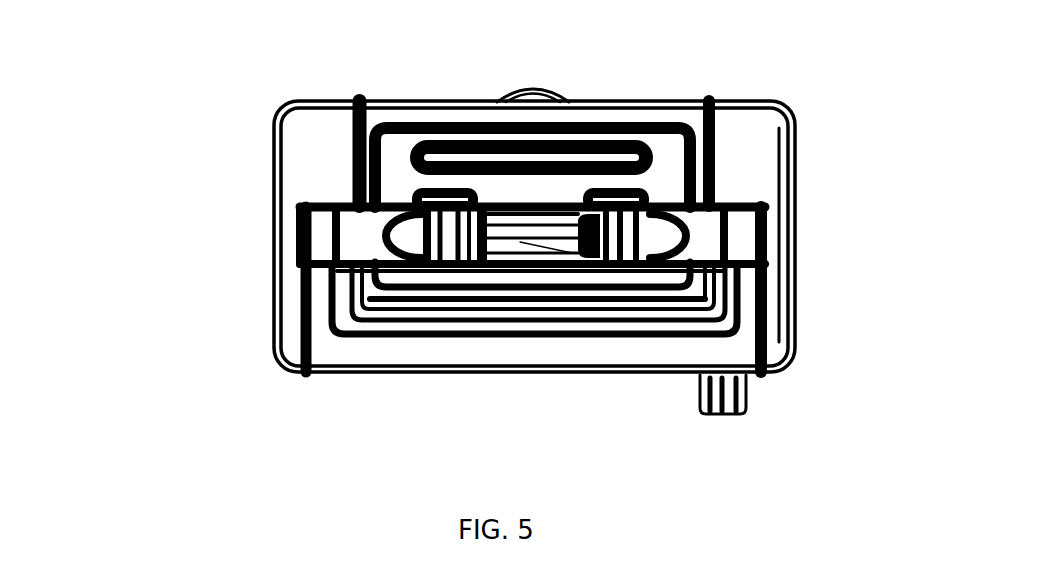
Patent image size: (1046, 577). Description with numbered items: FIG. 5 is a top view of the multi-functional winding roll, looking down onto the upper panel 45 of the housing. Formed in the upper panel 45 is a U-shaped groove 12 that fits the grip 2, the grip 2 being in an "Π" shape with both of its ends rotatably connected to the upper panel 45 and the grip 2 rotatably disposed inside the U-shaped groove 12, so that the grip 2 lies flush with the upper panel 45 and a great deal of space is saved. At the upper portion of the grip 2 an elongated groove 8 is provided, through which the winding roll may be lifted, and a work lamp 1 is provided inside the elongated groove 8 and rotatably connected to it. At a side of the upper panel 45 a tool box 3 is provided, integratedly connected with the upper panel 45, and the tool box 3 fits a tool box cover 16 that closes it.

The work lamp 1 is at (737, 308).
The grip 2 is at (355, 244).
The tool box 3 is at (690, 120).
The elongated groove 8 is at (657, 232).
The U-shaped groove 12 is at (340, 342).
The tool box cover 16 is at (402, 162).
The upper panel 45 is at (337, 165).